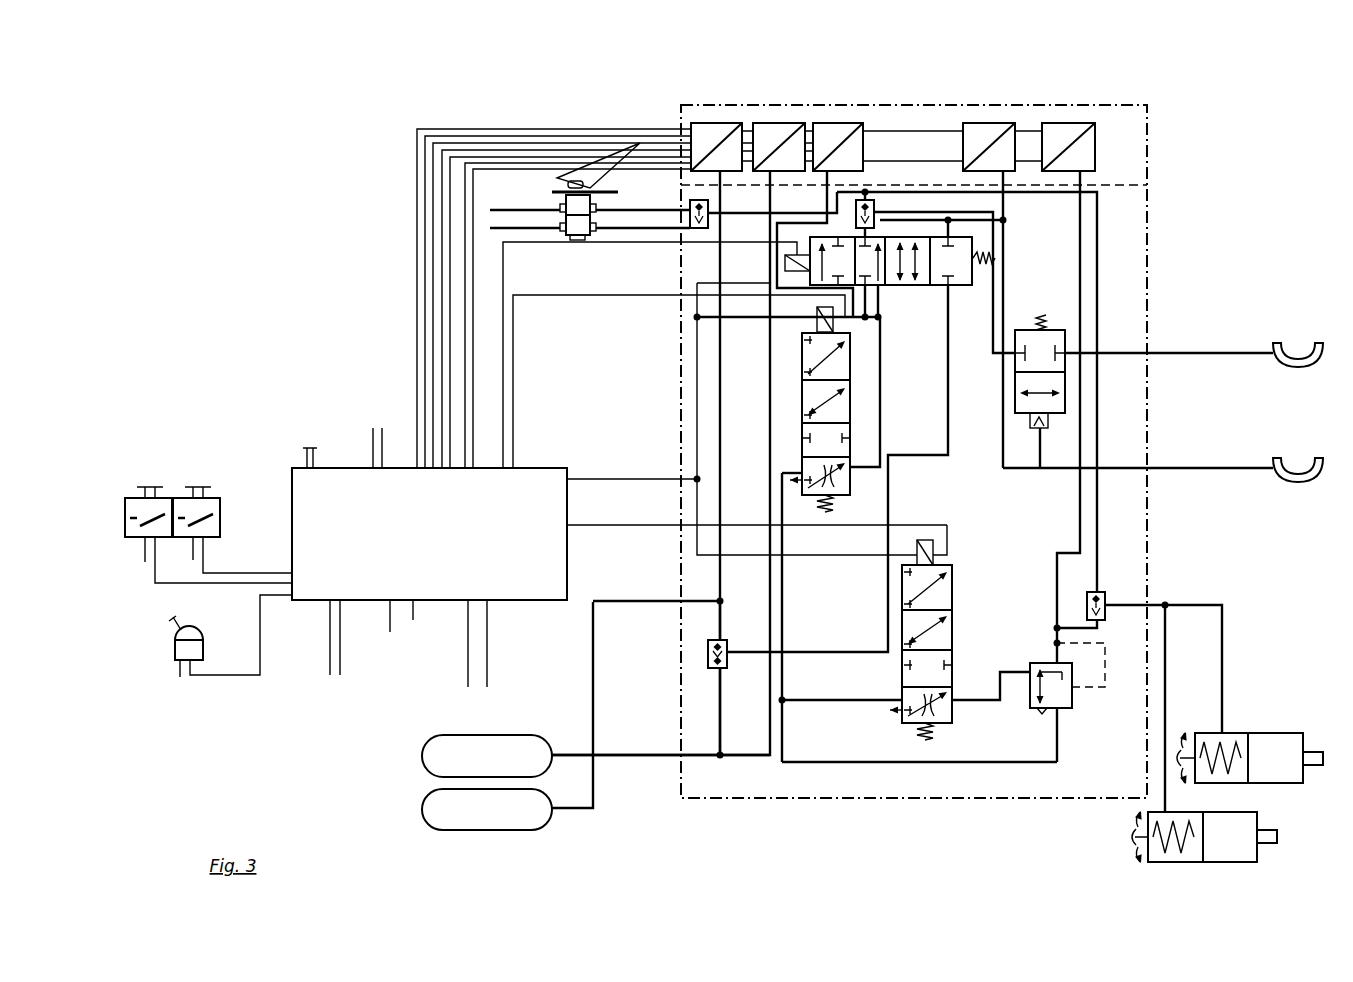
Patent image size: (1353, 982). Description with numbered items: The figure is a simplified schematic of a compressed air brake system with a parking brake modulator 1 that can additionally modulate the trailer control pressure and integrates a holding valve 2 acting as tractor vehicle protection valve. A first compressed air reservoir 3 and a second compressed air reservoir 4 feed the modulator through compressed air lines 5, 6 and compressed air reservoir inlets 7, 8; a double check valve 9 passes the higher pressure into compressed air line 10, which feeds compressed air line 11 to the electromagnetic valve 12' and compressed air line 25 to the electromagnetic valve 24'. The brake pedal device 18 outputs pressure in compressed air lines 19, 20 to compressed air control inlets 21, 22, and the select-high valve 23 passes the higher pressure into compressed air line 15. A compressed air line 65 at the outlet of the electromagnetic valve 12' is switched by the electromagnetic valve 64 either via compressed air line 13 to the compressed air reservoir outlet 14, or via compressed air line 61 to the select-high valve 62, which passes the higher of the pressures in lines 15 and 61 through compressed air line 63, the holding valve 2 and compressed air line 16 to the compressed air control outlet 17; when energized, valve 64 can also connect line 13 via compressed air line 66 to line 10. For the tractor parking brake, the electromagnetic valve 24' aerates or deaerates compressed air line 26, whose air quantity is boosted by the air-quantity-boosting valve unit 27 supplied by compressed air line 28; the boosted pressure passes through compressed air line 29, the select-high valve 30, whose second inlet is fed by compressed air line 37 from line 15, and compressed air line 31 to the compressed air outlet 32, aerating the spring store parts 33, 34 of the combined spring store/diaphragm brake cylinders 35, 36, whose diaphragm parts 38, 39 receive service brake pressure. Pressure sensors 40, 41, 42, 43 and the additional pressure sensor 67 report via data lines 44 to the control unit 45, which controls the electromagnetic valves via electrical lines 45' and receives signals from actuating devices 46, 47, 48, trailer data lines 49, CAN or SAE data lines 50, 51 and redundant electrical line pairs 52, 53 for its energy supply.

The parking brake modulator 1 is at (1147, 247).
The holding valve 2 is at (1065, 413).
The first compressed air reservoir 3 is at (422, 812).
The second compressed air reservoir 4 is at (422, 758).
The compressed air line 5 is at (720, 632).
The compressed air line 6 is at (720, 723).
The compressed air reservoir inlet 7 is at (682, 602).
The compressed air reservoir inlet 8 is at (680, 755).
The double check valve 9 is at (727, 658).
The compressed air line 10 is at (734, 651).
The compressed air line 11 is at (782, 578).
The electromagnetic valve 12' is at (836, 409).
The compressed air line 13 is at (1058, 494).
The compressed air reservoir outlet 14 is at (1147, 470).
The compressed air line 15 is at (798, 213).
The compressed air line 16 is at (1110, 352).
The compressed air control outlet 17 is at (1147, 352).
The brake pedal device 18 is at (557, 180).
The compressed air line 19 is at (631, 208).
The compressed air line 20 is at (614, 230).
The compressed air control inlet 21 is at (687, 207).
The compressed air control inlet 22 is at (676, 230).
The select-high valve 23 is at (710, 209).
The electromagnetic valve 24' is at (944, 640).
The compressed air line 25 is at (782, 698).
The compressed air line 26 is at (1000, 690).
The air-quantity-boosting valve unit 27 is at (1072, 705).
The compressed air line 28 is at (998, 762).
The compressed air line 29 is at (1057, 628).
The select-high valve 30 is at (1097, 592).
The compressed air line 31 is at (1113, 605).
The compressed air outlet 32 is at (1165, 604).
The spring store part 33 is at (1225, 733).
The spring store part 34 is at (1178, 812).
The combined spring store/diaphragm brake cylinder 35 is at (1300, 783).
The combined spring store/diaphragm brake cylinder 36 is at (1262, 843).
The compressed air line 37 is at (1097, 266).
The diaphragm part 38 is at (1275, 733).
The diaphragm part 39 is at (1225, 812).
The pressure sensor 40 is at (704, 123).
The pressure sensor 41 is at (779, 123).
The pressure sensor 42 is at (978, 123).
The pressure sensor 43 is at (1063, 123).
The data lines 44 is at (467, 377).
The control unit 45 is at (429, 534).
The electrical lines 45' is at (727, 466).
The actuating device 46 is at (125, 522).
The actuating device 47 is at (220, 520).
The actuating device 48 is at (203, 640).
The data lines 49 is at (373, 438).
The data lines 50 is at (413, 620).
The data lines 51 is at (487, 658).
The electrical line pair 52 is at (340, 660).
The electrical line pair 53 is at (313, 450).
The compressed air line 61 is at (857, 230).
The select-high valve 62 is at (875, 206).
The compressed air line 63 is at (993, 315).
The electromagnetic valve 64 is at (905, 287).
The compressed air line 65 is at (885, 355).
The compressed air line 66 is at (940, 457).
The pressure sensor 67 is at (833, 123).